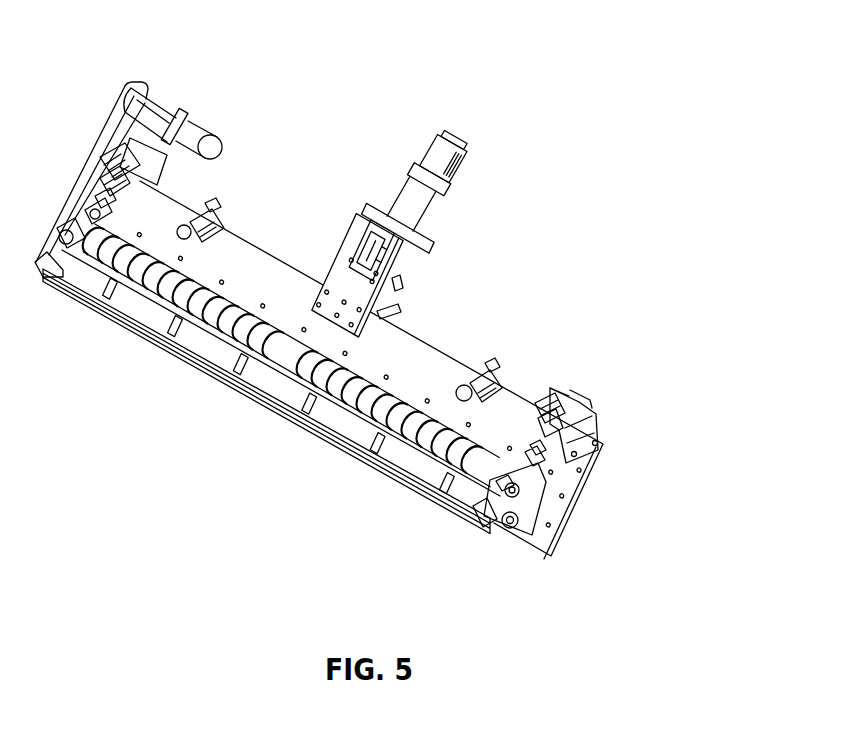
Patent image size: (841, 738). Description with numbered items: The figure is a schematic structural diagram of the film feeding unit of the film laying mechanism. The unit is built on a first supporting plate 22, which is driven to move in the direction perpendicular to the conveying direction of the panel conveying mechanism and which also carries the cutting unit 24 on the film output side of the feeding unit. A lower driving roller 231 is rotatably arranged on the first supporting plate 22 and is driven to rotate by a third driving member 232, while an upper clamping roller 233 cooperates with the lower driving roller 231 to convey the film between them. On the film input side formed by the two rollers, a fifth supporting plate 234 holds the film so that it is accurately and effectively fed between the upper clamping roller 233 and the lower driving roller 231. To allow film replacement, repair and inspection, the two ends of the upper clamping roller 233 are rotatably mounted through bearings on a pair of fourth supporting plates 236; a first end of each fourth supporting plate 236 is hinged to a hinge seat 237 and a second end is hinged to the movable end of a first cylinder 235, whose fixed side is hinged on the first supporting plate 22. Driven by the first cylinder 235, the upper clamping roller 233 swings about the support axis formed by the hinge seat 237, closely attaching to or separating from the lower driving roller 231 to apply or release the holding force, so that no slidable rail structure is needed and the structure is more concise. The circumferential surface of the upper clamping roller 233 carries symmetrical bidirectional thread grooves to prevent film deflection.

The first supporting plate 22 is at (576, 506).
The cutting unit 24 is at (428, 212).
The lower driving roller 231 is at (280, 385).
The third driving member 232 is at (133, 82).
The upper clamping roller 233 is at (398, 427).
The fifth supporting plate 234 is at (215, 362).
The first cylinder 235 is at (607, 450).
The fourth supporting plate 236 is at (529, 481).
The hinge seat 237 is at (490, 514).